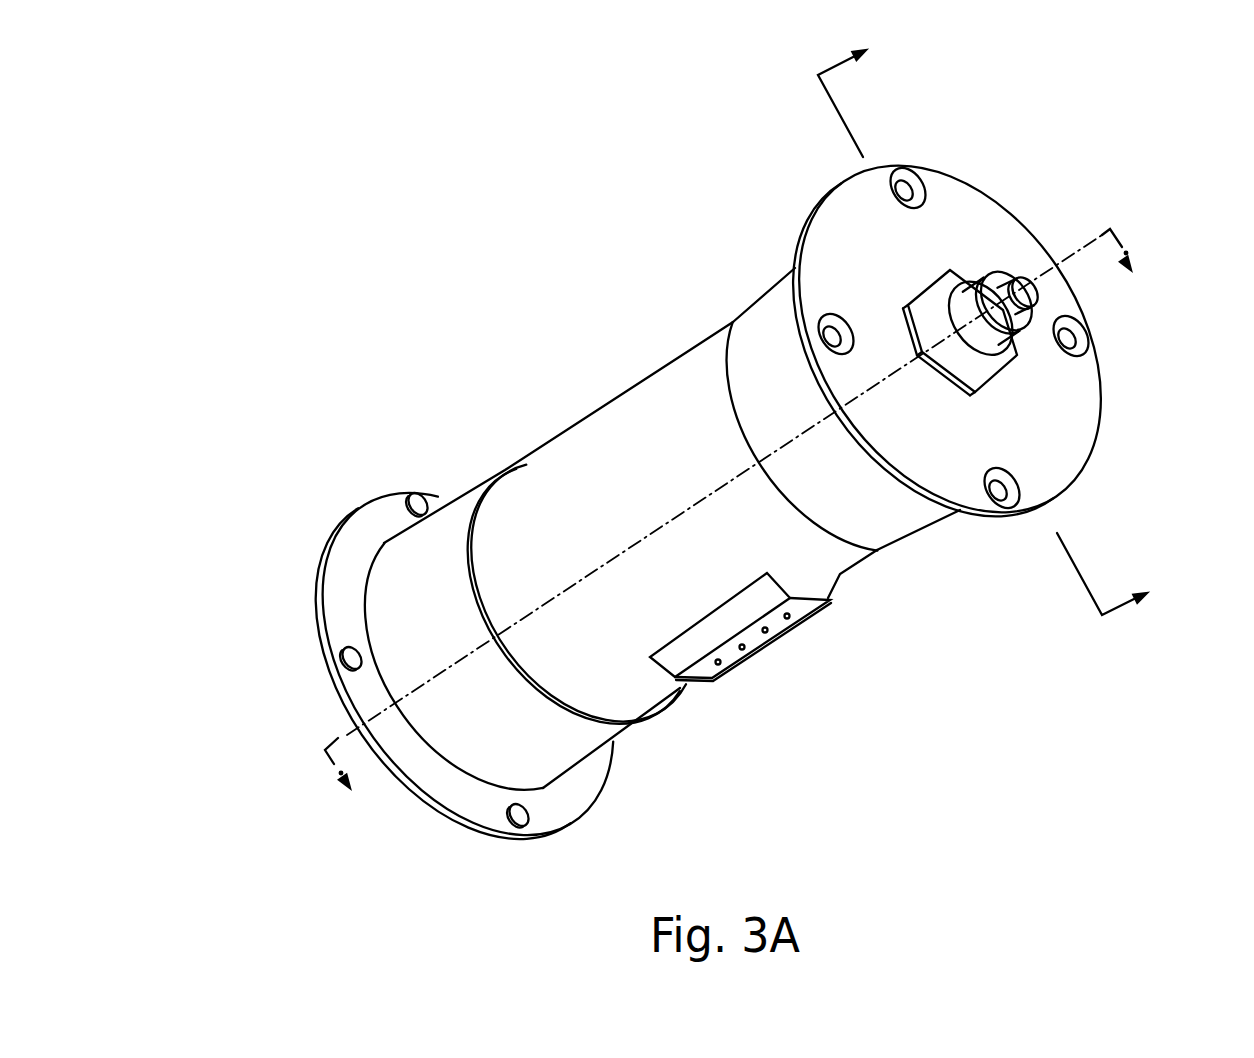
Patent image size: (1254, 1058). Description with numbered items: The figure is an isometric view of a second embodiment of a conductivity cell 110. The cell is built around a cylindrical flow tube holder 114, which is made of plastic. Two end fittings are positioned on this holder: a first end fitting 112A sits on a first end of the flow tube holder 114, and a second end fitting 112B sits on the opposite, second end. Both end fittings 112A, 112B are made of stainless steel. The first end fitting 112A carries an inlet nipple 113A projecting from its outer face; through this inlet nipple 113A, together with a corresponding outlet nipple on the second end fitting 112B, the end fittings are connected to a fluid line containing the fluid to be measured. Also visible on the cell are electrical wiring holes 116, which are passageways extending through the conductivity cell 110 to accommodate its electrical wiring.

The conductivity cell 110 is at (405, 227).
The first end fitting 112A is at (1058, 397).
The second end fitting 112B is at (382, 595).
The inlet nipple 113A is at (963, 303).
The flow tube holder 114 is at (615, 438).
The electrical wiring holes 116 is at (787, 616).